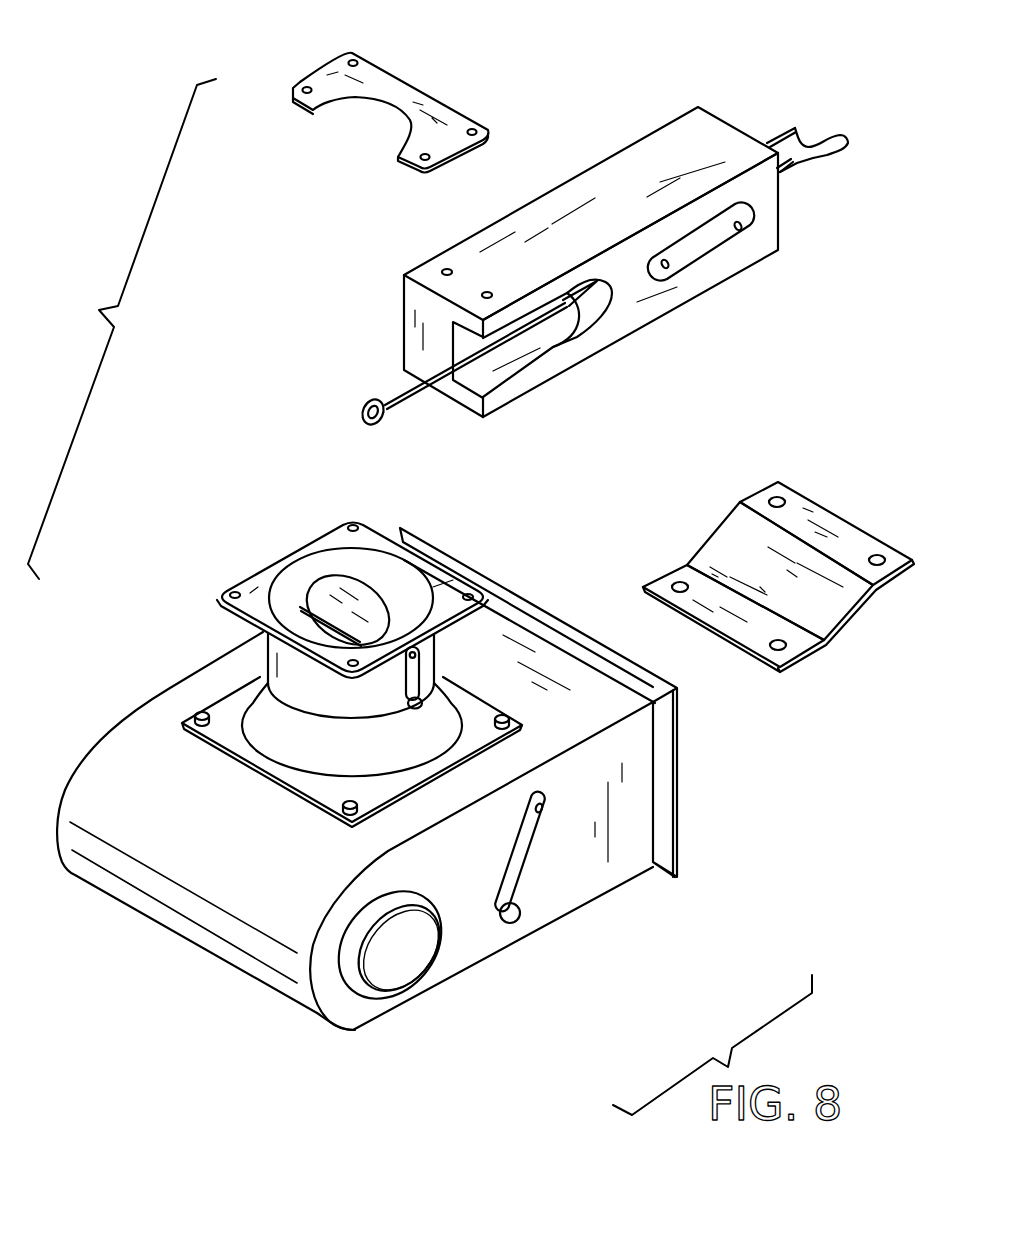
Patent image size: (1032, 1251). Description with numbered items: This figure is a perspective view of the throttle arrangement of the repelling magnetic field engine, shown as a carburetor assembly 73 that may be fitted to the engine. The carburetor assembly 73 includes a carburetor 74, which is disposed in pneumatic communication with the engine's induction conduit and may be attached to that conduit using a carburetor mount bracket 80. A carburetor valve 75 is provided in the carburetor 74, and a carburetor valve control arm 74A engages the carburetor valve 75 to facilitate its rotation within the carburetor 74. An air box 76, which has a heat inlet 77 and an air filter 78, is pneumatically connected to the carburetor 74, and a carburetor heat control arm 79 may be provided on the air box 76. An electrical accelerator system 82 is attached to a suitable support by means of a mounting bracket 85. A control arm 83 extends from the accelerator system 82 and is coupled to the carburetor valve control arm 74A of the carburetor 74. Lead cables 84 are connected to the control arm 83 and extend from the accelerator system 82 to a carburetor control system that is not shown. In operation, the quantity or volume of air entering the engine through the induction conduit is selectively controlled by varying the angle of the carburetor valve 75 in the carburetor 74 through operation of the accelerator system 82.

The carburetor assembly 73 is at (420, 597).
The carburetor 74 is at (437, 648).
The carburetor valve control arm 74A is at (415, 677).
The carburetor valve 75 is at (317, 580).
The air box 76 is at (597, 865).
The heat inlet 77 is at (405, 970).
The air filter 78 is at (677, 755).
The carburetor heat control arm 79 is at (523, 848).
The carburetor mount bracket 80 is at (822, 518).
The electrical accelerator system 82 is at (553, 218).
The control arm 83 is at (393, 398).
The lead cables 84 is at (848, 143).
The mounting bracket 85 is at (397, 90).